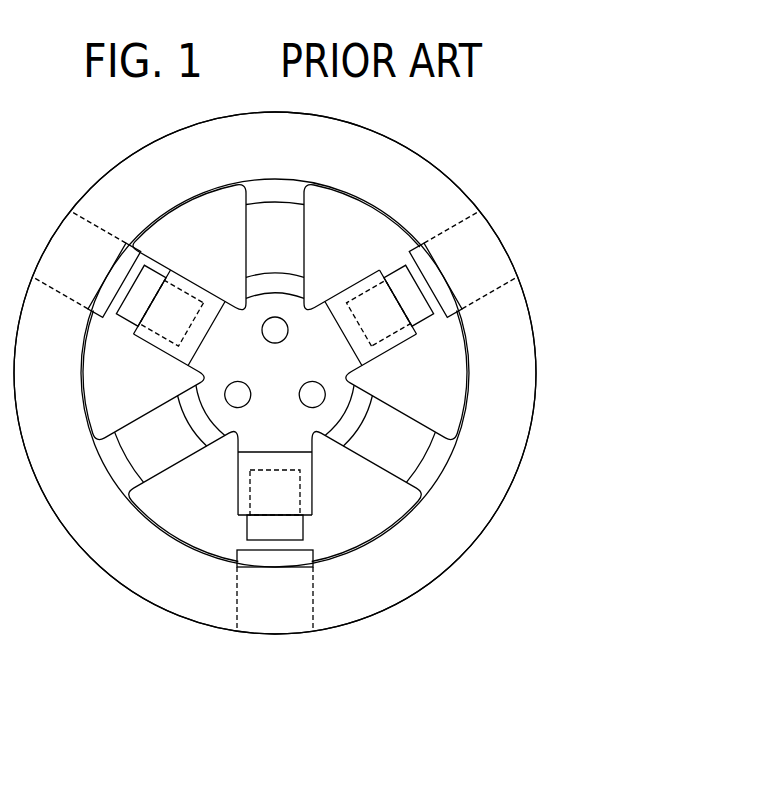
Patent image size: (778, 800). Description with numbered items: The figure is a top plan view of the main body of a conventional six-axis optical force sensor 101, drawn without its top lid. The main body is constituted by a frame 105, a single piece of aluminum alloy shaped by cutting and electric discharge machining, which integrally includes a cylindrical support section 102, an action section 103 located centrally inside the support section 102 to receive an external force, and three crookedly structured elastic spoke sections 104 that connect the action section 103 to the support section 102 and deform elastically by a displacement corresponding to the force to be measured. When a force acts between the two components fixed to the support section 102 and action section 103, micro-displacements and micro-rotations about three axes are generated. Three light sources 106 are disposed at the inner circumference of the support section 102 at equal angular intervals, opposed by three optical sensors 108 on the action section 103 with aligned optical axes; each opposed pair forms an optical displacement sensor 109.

The six-axis optical force sensor 101 is at (509, 183).
The cylindrical support section 102 is at (447, 556).
The action section 103 is at (355, 376).
The elastic spoke sections 104 is at (297, 238).
The frame 105 is at (539, 389).
The light sources 106 is at (414, 254).
The optical sensors 108 is at (150, 273).
The optical displacement sensor 109 is at (392, 259).